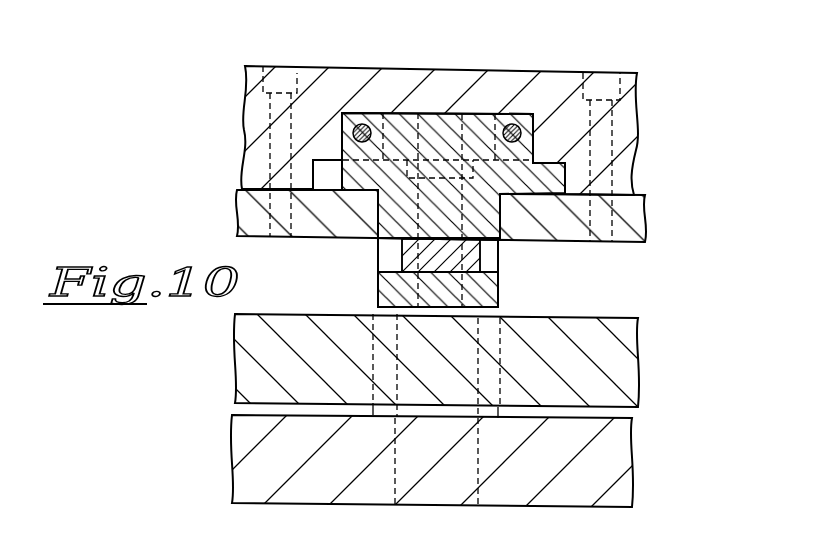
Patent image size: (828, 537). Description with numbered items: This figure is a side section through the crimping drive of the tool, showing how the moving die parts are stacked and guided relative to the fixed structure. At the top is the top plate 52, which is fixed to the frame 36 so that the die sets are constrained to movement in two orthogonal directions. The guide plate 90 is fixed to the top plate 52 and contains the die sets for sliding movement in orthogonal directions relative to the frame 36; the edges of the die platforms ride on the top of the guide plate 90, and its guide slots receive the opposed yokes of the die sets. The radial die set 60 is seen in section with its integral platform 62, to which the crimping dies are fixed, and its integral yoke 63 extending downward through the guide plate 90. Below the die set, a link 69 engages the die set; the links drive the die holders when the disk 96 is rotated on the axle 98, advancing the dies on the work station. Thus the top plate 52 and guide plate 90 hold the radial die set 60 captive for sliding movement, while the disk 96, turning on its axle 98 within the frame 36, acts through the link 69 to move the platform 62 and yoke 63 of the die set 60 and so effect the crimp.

The frame 36 is at (625, 462).
The top plate 52 is at (633, 117).
The radial die set 60 is at (490, 113).
The platform 62 is at (548, 165).
The yoke 63 is at (499, 290).
The link 69 is at (473, 257).
The guide plate 90 is at (637, 219).
The disk 96 is at (627, 368).
The axle 98 is at (465, 453).